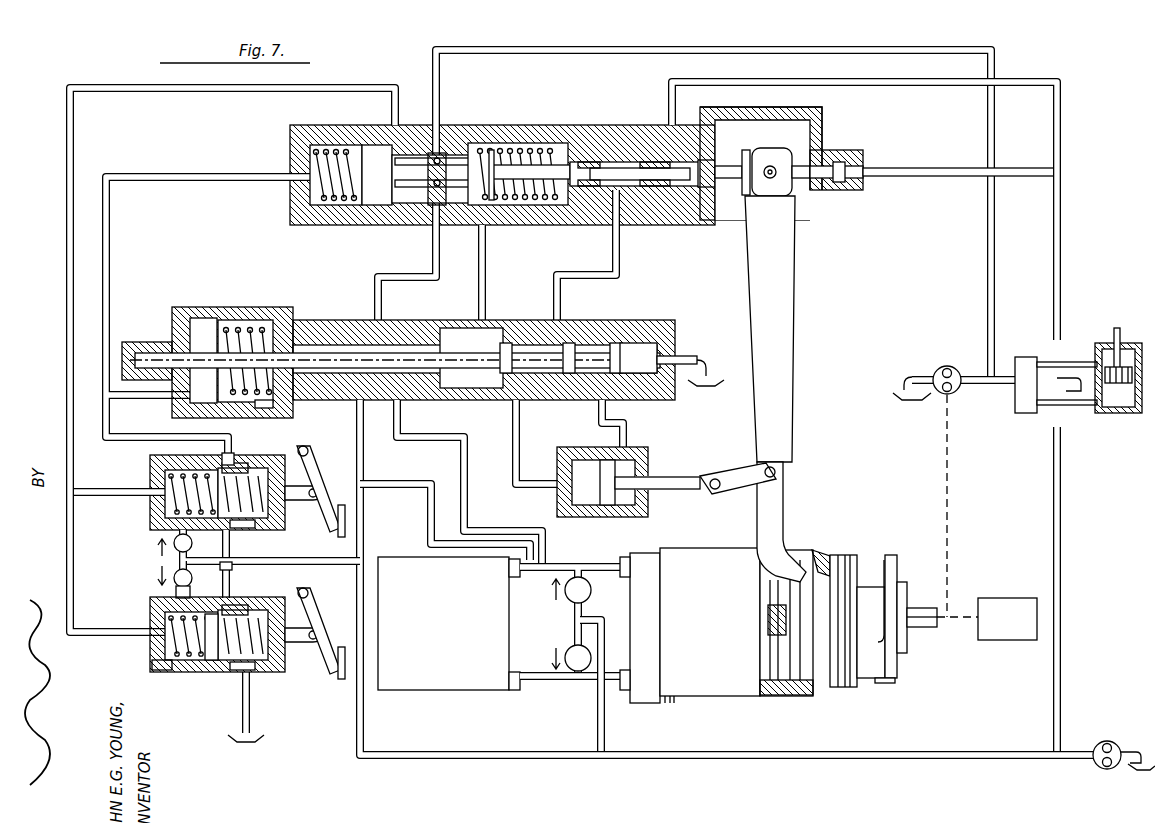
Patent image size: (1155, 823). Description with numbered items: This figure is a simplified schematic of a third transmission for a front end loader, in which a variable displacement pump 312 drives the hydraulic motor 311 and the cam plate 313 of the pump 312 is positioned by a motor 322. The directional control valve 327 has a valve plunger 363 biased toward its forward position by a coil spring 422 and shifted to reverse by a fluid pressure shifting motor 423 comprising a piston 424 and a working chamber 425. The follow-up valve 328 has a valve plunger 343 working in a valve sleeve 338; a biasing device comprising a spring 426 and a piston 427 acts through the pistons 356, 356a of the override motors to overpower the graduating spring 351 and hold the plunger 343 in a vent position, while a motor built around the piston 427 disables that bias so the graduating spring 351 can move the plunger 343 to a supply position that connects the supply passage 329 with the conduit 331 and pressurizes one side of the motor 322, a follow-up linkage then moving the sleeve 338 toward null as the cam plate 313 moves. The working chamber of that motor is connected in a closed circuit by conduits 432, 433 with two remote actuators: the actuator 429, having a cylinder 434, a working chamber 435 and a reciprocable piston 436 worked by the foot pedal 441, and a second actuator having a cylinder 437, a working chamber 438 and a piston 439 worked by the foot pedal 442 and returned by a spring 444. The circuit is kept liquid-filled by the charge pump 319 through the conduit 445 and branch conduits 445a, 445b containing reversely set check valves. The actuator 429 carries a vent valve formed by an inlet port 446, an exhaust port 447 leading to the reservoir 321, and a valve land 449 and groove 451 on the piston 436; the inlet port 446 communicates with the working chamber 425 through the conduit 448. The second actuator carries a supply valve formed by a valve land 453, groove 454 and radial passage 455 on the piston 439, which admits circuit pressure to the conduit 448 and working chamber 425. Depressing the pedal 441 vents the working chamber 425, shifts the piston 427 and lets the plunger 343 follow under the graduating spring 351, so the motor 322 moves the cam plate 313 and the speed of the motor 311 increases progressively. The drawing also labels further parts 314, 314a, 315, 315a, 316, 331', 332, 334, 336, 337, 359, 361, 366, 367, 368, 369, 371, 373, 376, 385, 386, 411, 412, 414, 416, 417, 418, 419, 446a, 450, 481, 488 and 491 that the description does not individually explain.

The motor 311 is at (453, 680).
The pump 312 is at (690, 555).
The cam plate 313 is at (770, 621).
The supply conduit 314 is at (576, 566).
The branch conduit 314a is at (429, 486).
The return conduit 315 is at (583, 678).
The branch conduit 315a is at (463, 433).
The bypass conduit 316 is at (575, 626).
The charge pump 319 is at (1092, 758).
The reservoir 321 is at (222, 737).
The motor 322 is at (652, 472).
The directional control valve 327 is at (668, 320).
The follow-up valve 328 is at (560, 126).
The supply passage 329 is at (622, 266).
The conduit 331 is at (889, 418).
The control rod 331' is at (960, 156).
The conduit 332 is at (488, 266).
The passage 334 is at (626, 205).
The coupling block 336 is at (437, 206).
The conduit 337 is at (432, 257).
The valve sleeve 338 is at (726, 170).
The valve plunger 343 is at (592, 166).
The graduating spring 351 is at (515, 150).
The piston of override motor 356 is at (488, 206).
The piston of override motor 356a is at (450, 158).
The bearing block 359 is at (838, 166).
The collar 361 is at (840, 184).
The valve plunger 363 is at (270, 402).
The chamber 366 is at (496, 330).
The valve land 367 is at (569, 343).
The valve land 368 is at (623, 343).
The valve stem 369 is at (337, 350).
The lever arm 371 is at (788, 284).
The drain stub 373 is at (700, 358).
The chamber 376 is at (684, 200).
The conduit 385 is at (521, 434).
The conduit 386 is at (628, 430).
The governor block 411 is at (1026, 357).
The pump 412 is at (950, 366).
The drain 414 is at (970, 385).
The rod 416 is at (1050, 375).
The cylinder 417 is at (1060, 358).
The rod 418 is at (1052, 404).
The engine 419 is at (1016, 641).
The coil spring 422 is at (252, 322).
The fluid pressure shifting motor 423 is at (178, 310).
The piston 424 is at (212, 322).
The working chamber 425 is at (176, 334).
The spring 426 is at (300, 170).
The piston 427 is at (378, 160).
The hydraulic actuator 429 is at (172, 672).
The conduit 432 is at (66, 337).
The conduit 433 is at (150, 491).
The cylinder 434 is at (323, 631).
The working chamber 435 is at (179, 672).
The reciprocable piston 436 is at (297, 656).
The cylinder 437 is at (275, 531).
The working chamber 438 is at (150, 513).
The reciprocable piston 439 is at (348, 470).
The foot pedal 441 is at (340, 680).
The foot pedal 442 is at (348, 512).
The spring 444 is at (184, 478).
The conduit 445 is at (463, 753).
The branch conduit 445a is at (165, 597).
The branch conduit 445b is at (172, 537).
The inlet port 446 is at (191, 592).
The fitting 446a is at (233, 568).
The exhaust port 447 is at (272, 672).
The conduit 448 is at (150, 625).
The valve land 449 is at (192, 662).
The stem 450 is at (229, 452).
The groove 451 is at (242, 614).
The valve land 453 is at (241, 532).
The groove 454 is at (323, 486).
The radial passage 455 is at (293, 522).
The conduit 481 is at (988, 285).
The piston 488 is at (386, 202).
The plunger 491 is at (251, 462).